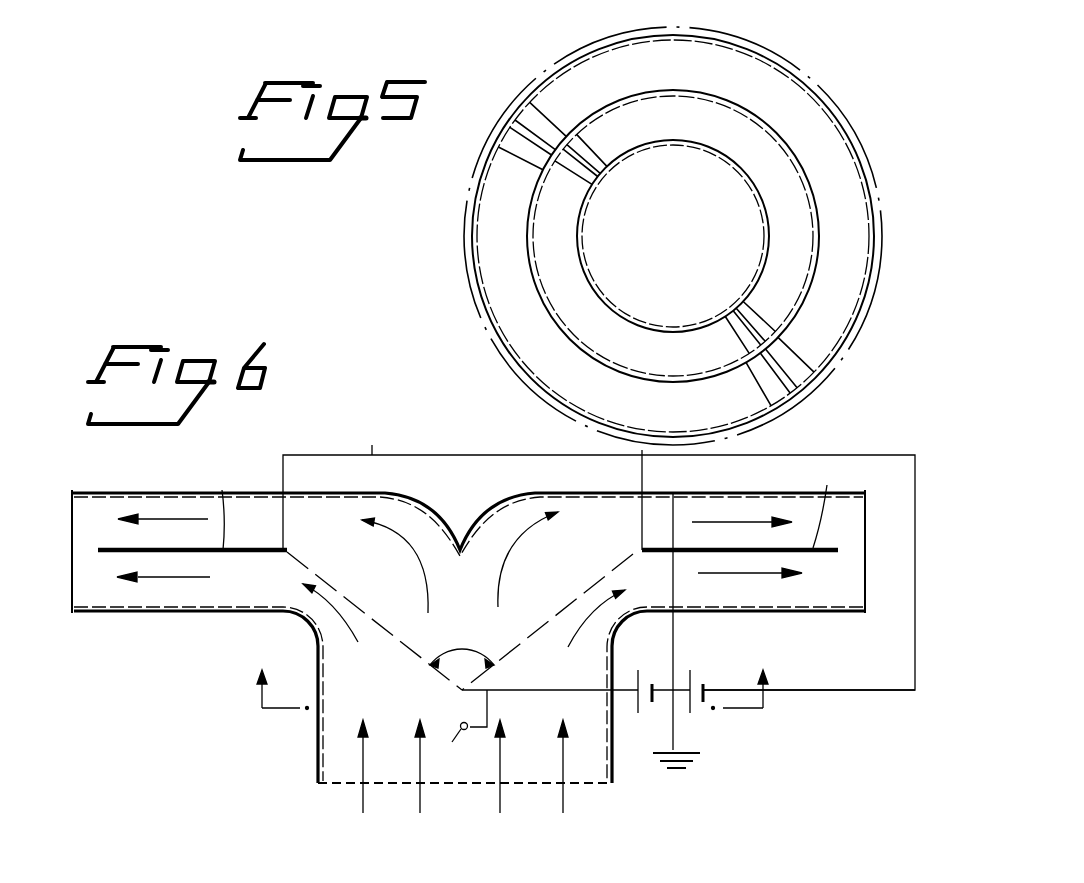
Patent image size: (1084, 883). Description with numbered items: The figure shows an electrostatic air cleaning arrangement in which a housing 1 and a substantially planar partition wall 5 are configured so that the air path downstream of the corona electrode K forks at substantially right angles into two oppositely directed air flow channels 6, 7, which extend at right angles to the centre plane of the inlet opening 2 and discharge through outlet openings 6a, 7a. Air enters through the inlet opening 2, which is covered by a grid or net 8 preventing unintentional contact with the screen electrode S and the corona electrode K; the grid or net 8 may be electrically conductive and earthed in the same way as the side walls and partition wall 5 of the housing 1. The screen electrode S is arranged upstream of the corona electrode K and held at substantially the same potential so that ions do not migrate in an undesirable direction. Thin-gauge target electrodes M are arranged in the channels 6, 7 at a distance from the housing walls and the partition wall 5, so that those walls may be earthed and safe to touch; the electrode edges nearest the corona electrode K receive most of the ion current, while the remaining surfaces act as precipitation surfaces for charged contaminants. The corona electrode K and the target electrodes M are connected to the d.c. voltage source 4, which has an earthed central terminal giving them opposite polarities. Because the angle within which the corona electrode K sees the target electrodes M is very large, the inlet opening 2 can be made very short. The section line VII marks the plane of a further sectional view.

In FIG. 5, the housing 1 is at (797, 80).
In FIG. 6, the housing 1 is at (155, 613).
In FIG. 6, the inlet opening 2 is at (352, 772).
In FIG. 6, the d.c. voltage source 4 is at (646, 682).
In FIG. 5, the partition wall 5 is at (755, 189).
In FIG. 6, the partition wall 5 is at (554, 491).
In FIG. 5, the air flow channel 6 is at (738, 128).
In FIG. 6, the air flow channel 6 is at (248, 513).
In FIG. 6, the outlet opening 6a is at (72, 537).
In FIG. 6, the air flow channel 7 is at (657, 522).
In FIG. 6, the outlet opening 7a is at (860, 535).
In FIG. 6, the grid or net 8 is at (463, 785).
In FIG. 5, the target electrode M is at (803, 166).
In FIG. 6, the target electrode M is at (521, 504).
In FIG. 6, the corona electrode K is at (460, 690).
In FIG. 6, the screen electrode S is at (463, 726).
In FIG. 6, the section line VII- VII is at (505, 675).